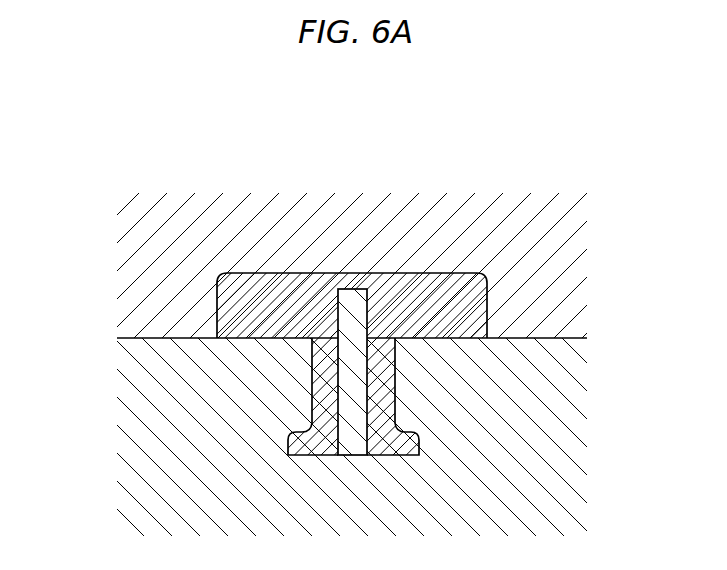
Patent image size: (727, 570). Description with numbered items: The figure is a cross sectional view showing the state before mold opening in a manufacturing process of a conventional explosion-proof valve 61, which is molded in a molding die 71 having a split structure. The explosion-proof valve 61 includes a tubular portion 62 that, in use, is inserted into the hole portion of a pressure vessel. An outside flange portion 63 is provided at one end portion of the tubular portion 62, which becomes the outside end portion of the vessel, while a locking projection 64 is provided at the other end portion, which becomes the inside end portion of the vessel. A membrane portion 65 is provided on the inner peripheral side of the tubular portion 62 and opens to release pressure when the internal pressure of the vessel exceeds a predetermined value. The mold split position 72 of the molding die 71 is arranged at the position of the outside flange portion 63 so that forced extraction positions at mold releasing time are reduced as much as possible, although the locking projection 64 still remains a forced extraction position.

The explosion-proof valve 61 is at (461, 275).
The tubular portion 62 is at (328, 385).
The outside flange portion 63 is at (240, 312).
The locking projection 64 is at (292, 447).
The membrane portion 65 is at (346, 289).
The molding die 71 is at (575, 478).
The mold split position 72 is at (517, 328).